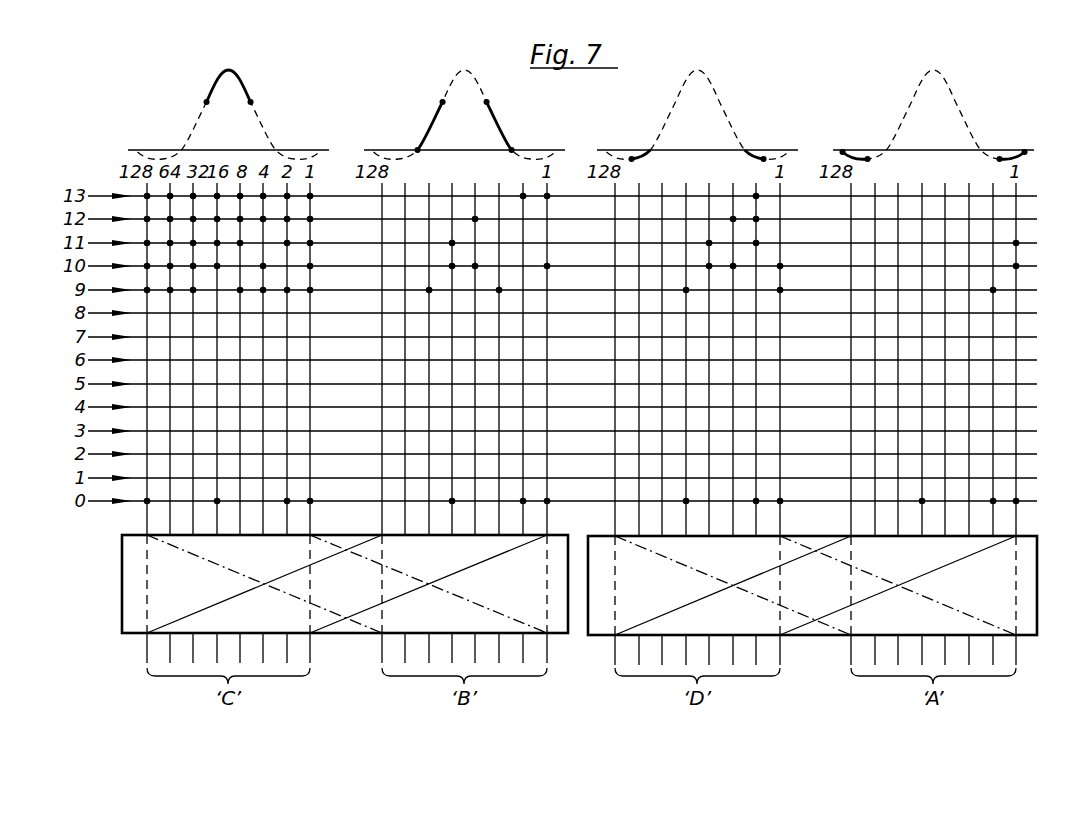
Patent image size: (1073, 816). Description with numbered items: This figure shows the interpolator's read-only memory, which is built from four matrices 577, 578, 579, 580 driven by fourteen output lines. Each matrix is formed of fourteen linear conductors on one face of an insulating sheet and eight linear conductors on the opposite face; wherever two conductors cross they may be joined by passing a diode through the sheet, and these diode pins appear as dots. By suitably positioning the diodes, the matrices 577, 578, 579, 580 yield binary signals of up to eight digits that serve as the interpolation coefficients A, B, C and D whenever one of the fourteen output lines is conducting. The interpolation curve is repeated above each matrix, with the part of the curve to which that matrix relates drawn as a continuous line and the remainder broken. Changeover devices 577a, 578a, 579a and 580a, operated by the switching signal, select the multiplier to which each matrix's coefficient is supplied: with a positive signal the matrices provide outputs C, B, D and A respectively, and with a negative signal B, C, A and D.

The matrix 577 is at (181, 463).
The matrix 578 is at (403, 464).
The matrix 579 is at (631, 464).
The matrix 580 is at (868, 463).
The changeover device 577a is at (264, 584).
The changeover device 578a is at (428, 584).
The changeover device 579a is at (733, 585).
The changeover device 580a is at (898, 585).